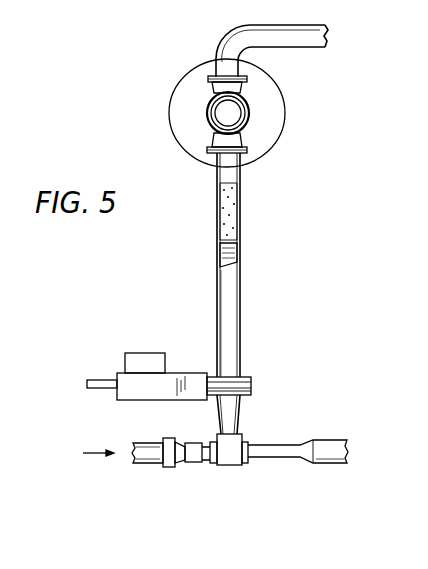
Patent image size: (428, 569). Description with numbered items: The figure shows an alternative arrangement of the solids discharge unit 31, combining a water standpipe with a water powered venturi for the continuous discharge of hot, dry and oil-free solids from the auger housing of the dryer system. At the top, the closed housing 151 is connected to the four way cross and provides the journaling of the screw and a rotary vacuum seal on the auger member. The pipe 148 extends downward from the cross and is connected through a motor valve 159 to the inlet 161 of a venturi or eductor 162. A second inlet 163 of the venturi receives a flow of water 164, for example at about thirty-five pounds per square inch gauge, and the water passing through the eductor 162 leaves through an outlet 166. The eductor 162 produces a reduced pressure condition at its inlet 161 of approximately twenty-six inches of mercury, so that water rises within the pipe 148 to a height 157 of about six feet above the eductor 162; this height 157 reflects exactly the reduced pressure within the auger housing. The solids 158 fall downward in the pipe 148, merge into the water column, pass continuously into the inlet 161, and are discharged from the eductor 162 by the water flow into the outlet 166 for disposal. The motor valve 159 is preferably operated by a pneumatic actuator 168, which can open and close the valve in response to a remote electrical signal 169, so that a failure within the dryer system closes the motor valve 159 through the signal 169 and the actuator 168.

The solids discharge unit 31 is at (241, 291).
The pipe 148 is at (225, 300).
The closed housing 151 is at (207, 110).
The water height 157 is at (230, 243).
The solids 158 is at (233, 219).
The motor valve 159 is at (252, 383).
The inlet 161 is at (238, 422).
The venturi or eductor 162 is at (237, 466).
The inlet 163 is at (173, 466).
The flow of water 164 is at (97, 453).
The outlet 166 is at (302, 437).
The pneumatic actuator 168 is at (147, 398).
The remote electrical signal 169 is at (92, 380).